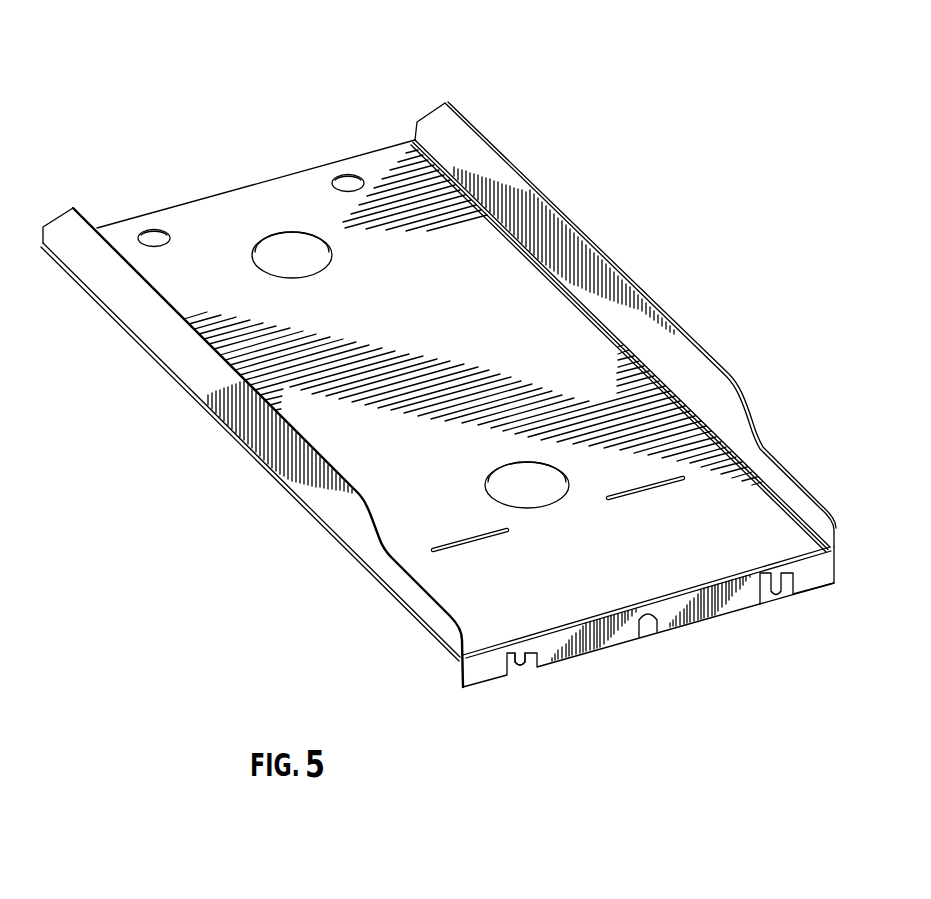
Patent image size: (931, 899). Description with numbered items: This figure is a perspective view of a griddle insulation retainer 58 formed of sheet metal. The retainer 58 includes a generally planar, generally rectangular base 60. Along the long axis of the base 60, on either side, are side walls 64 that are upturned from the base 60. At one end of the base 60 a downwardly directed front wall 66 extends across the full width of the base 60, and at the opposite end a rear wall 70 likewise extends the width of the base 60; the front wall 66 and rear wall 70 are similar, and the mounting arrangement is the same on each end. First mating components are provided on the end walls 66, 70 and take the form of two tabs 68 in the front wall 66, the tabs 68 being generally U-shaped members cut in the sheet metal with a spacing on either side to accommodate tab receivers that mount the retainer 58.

The griddle insulation retainer 58 is at (303, 106).
The base 60 is at (212, 218).
The side walls 64 is at (187, 350).
The front wall 66 is at (483, 670).
The tabs 68 is at (522, 667).
The rear wall 70 is at (43, 257).